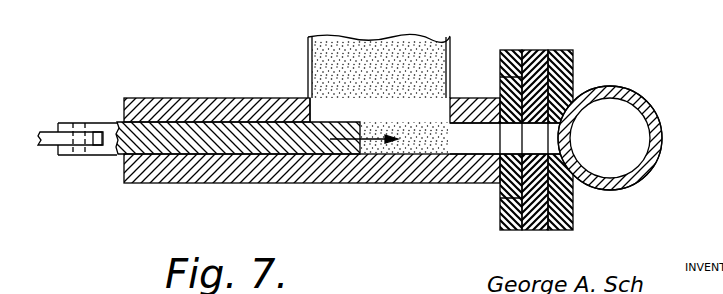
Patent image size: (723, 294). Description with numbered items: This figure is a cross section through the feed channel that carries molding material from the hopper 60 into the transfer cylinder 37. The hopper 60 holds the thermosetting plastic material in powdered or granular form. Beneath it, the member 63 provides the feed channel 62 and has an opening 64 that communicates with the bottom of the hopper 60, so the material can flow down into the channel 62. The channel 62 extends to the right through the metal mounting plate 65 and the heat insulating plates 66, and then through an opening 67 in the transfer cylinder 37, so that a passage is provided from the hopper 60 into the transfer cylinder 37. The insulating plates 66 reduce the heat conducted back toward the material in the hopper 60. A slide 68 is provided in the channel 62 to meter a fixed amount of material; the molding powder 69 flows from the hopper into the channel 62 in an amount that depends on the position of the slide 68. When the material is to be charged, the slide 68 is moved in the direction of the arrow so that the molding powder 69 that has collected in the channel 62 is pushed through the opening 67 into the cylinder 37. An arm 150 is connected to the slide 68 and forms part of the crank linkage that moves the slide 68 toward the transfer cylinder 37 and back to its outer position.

The transfer cylinder 37 is at (660, 119).
The hopper 60 is at (308, 45).
The feed channel 62 is at (473, 133).
The member 63 is at (160, 97).
The opening 64 is at (314, 104).
The metal mounting plate 65 is at (510, 62).
The heat insulating plates 66 is at (557, 52).
The opening 67 is at (563, 133).
The slide 68 is at (230, 154).
The molding powder 69 is at (413, 154).
The arm 150 is at (50, 146).